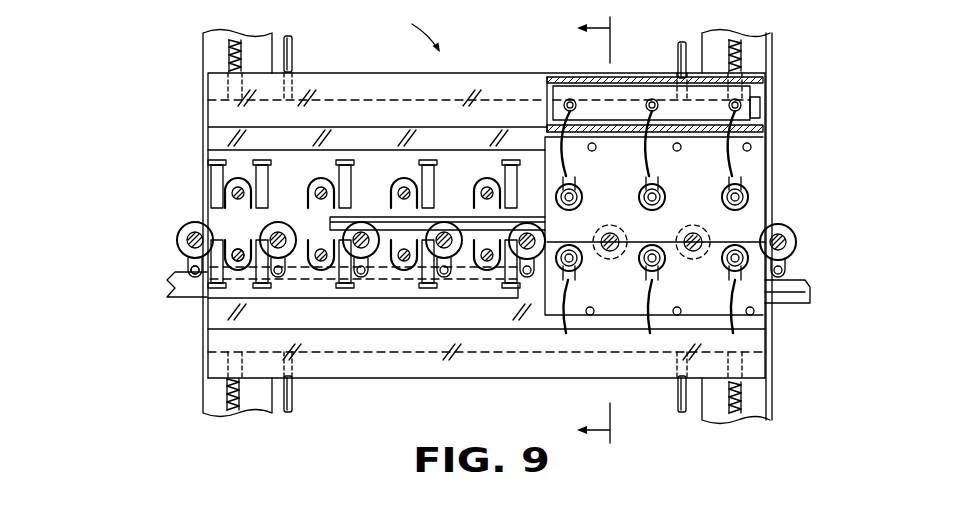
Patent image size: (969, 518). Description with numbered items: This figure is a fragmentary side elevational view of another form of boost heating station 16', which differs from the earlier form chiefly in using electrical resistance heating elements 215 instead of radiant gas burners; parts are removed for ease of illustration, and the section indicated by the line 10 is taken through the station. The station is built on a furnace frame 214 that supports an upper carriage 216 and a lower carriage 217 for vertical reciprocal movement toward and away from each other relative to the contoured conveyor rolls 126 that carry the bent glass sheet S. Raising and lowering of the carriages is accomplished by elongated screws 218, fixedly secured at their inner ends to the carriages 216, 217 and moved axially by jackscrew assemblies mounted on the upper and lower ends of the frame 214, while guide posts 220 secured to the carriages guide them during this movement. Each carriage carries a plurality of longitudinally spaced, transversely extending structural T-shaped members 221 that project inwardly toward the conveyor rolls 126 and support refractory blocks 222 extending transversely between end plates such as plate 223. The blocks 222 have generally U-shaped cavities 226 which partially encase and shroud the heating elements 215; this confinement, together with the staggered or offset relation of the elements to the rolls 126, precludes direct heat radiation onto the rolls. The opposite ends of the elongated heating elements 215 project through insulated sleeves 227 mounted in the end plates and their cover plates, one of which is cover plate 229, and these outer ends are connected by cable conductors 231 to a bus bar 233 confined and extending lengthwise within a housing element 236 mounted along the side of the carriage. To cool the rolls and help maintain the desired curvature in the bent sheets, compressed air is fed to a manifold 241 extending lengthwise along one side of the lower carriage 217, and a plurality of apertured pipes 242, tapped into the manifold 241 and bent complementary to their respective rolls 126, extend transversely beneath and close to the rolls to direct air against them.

The boost heating station 16' is at (413, 31).
The section line 10 is at (611, 230).
The conveyor rolls 126 is at (178, 231).
The furnace frame 214 is at (203, 58).
The electrical heating elements 215 is at (490, 185).
The upper carriage 216 is at (208, 138).
The lower carriage 217 is at (207, 318).
The elongated screws 218 is at (237, 40).
The guide posts 220 is at (290, 42).
The T-shaped members 221 is at (312, 158).
The blocks 222 is at (220, 172).
The plate 223 is at (446, 177).
The cavities 226 is at (240, 249).
The insulated sleeves 227 is at (750, 194).
The cover plate 229 is at (712, 186).
The cable conductors 231 is at (748, 165).
The bus bar 233 is at (560, 100).
The housing element 236 is at (575, 77).
The manifold 241 is at (205, 275).
The pipes 242 is at (190, 272).
The shaft bar S is at (378, 220).